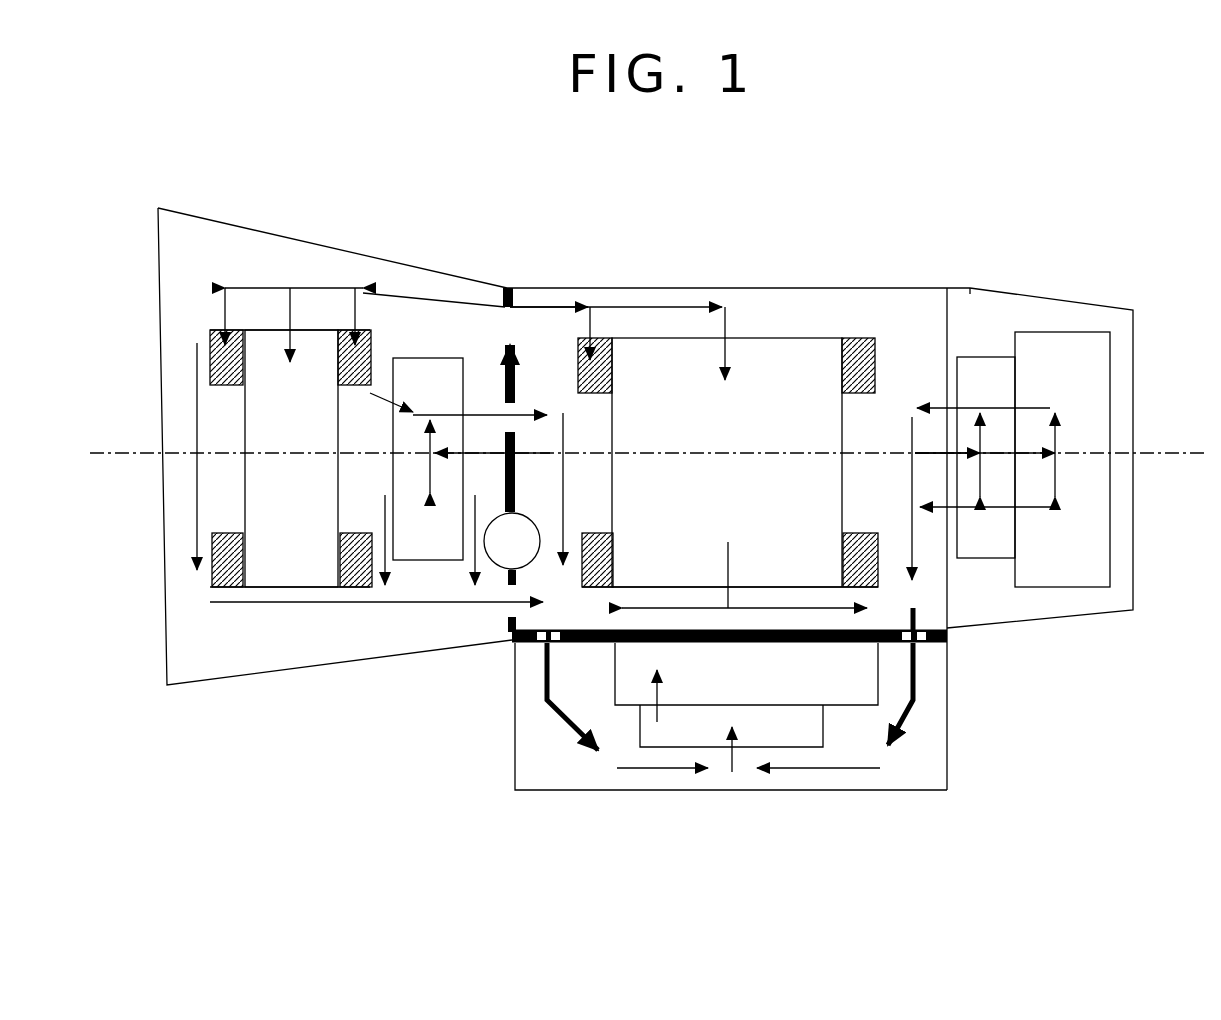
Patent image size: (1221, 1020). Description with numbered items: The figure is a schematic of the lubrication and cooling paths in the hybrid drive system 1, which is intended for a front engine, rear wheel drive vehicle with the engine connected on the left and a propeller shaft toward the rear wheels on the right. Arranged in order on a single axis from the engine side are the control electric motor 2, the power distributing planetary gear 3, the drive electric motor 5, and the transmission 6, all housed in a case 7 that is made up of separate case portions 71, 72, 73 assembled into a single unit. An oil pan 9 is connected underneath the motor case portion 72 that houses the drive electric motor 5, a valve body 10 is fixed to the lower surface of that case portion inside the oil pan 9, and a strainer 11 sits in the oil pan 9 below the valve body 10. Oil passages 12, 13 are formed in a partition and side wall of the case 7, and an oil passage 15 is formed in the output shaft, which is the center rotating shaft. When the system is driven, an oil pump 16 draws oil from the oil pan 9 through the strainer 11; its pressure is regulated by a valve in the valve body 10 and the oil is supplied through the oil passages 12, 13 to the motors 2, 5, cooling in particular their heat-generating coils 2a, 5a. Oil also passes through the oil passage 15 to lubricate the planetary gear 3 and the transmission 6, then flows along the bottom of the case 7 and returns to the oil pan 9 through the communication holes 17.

The hybrid drive system 1 is at (773, 233).
The control electric motor 2 is at (310, 267).
The coils 2a is at (210, 340).
The power distributing planetary gear 3 is at (423, 283).
The drive electric motor 5 is at (805, 282).
The coils 5a is at (597, 388).
The transmission 6 is at (1023, 287).
The case 7 is at (622, 283).
The case portion 71 is at (370, 252).
The motor case portion 72 is at (855, 288).
The case portion 73 is at (970, 292).
The oil pan 9 is at (545, 788).
The valve body 10 is at (863, 688).
The strainer 11 is at (810, 733).
The oil passage 12 is at (513, 367).
The oil passage 13 is at (455, 297).
The oil passage 15 is at (730, 458).
The oil pump 16 is at (508, 555).
The communication holes 17 is at (543, 645).